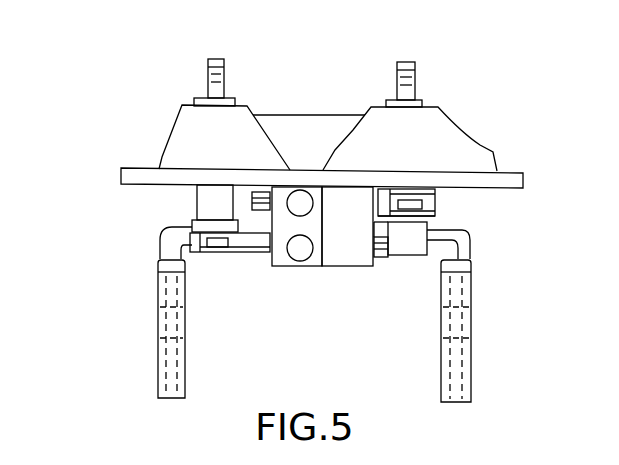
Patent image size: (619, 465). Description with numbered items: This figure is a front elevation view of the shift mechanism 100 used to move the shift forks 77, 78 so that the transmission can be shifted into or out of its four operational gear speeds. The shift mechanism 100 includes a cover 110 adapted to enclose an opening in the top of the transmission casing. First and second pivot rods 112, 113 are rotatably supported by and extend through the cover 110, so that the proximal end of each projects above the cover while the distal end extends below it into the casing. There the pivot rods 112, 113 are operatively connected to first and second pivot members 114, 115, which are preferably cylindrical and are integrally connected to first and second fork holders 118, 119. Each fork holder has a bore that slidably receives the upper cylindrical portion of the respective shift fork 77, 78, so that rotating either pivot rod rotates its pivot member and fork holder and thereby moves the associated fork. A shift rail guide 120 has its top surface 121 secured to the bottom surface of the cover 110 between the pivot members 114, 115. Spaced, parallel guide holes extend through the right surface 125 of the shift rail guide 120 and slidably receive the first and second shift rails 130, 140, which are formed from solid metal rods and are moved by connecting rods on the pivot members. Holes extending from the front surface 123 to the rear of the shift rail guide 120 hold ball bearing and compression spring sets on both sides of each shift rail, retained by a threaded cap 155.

The shift mechanism 100 is at (470, 104).
The cover 110 is at (177, 130).
The first pivot rod 112 is at (407, 62).
The second pivot rod 113 is at (217, 58).
The first pivot member 114 is at (420, 216).
The second pivot member 115 is at (197, 200).
The first fork holder 118 is at (417, 237).
The second fork holder 119 is at (202, 224).
The shift rail guide 120 is at (377, 278).
The top surface 121 is at (306, 169).
The front surface 123 is at (357, 264).
The right surface 125 is at (268, 222).
The first shift rail 130 is at (243, 242).
The second shift rail 140 is at (422, 204).
The threaded cap 155 is at (302, 205).
The shift fork 77 is at (470, 337).
The shift fork 78 is at (158, 307).